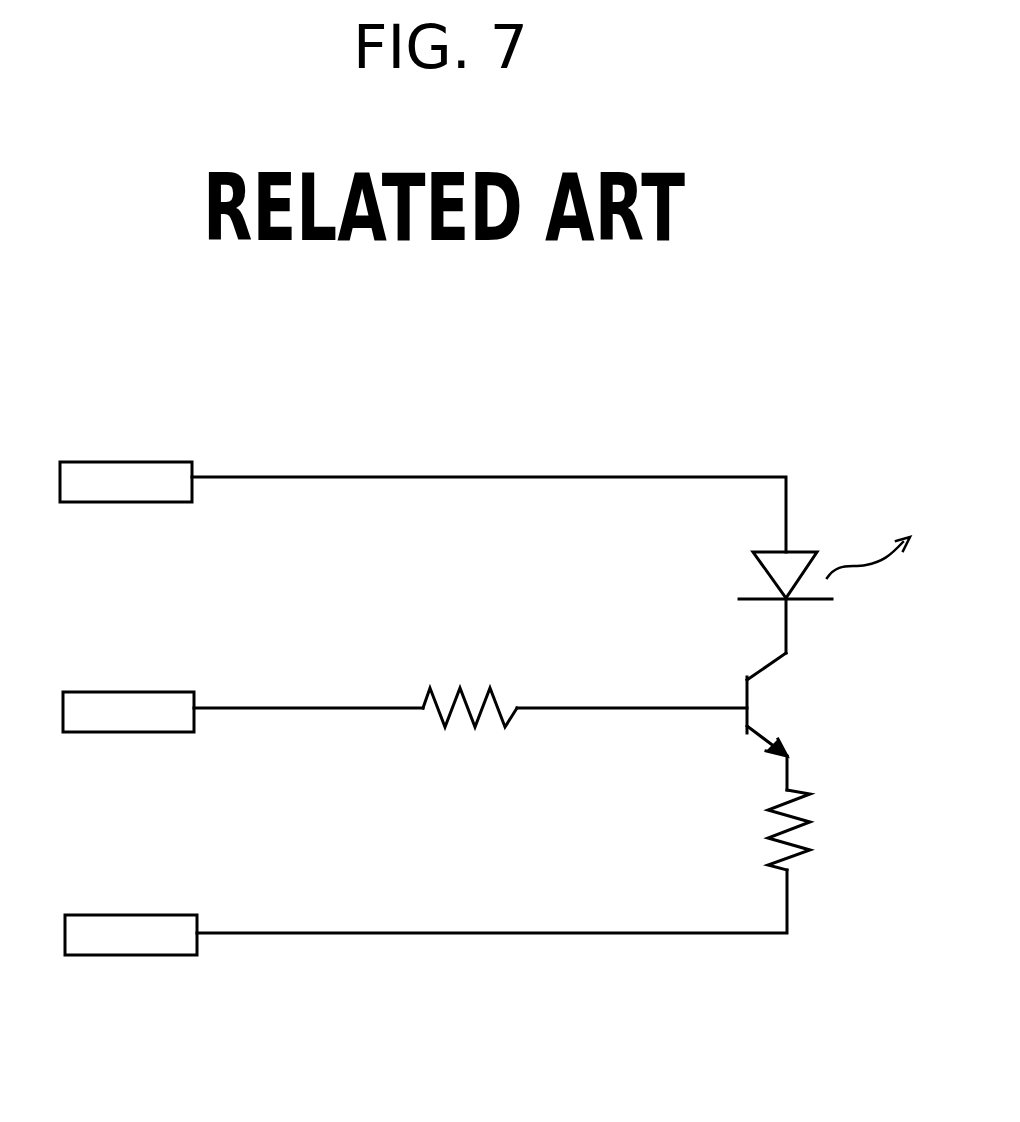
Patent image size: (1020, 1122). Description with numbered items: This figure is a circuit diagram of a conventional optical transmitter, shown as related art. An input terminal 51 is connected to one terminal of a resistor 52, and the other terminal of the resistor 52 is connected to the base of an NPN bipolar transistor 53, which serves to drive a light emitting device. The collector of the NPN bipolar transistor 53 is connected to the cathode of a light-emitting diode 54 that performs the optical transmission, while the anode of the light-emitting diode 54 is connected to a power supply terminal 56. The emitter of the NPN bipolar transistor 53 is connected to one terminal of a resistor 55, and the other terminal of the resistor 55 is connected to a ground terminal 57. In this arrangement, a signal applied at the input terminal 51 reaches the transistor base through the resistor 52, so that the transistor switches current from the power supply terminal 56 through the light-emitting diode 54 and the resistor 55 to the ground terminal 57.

The input terminal 51 is at (128, 684).
The resistor 52 is at (470, 681).
The NPN bipolar transistor 53 is at (806, 704).
The light-emitting diode 54 is at (762, 573).
The resistor 55 is at (817, 830).
The power supply terminal 56 is at (126, 455).
The ground terminal 57 is at (131, 908).